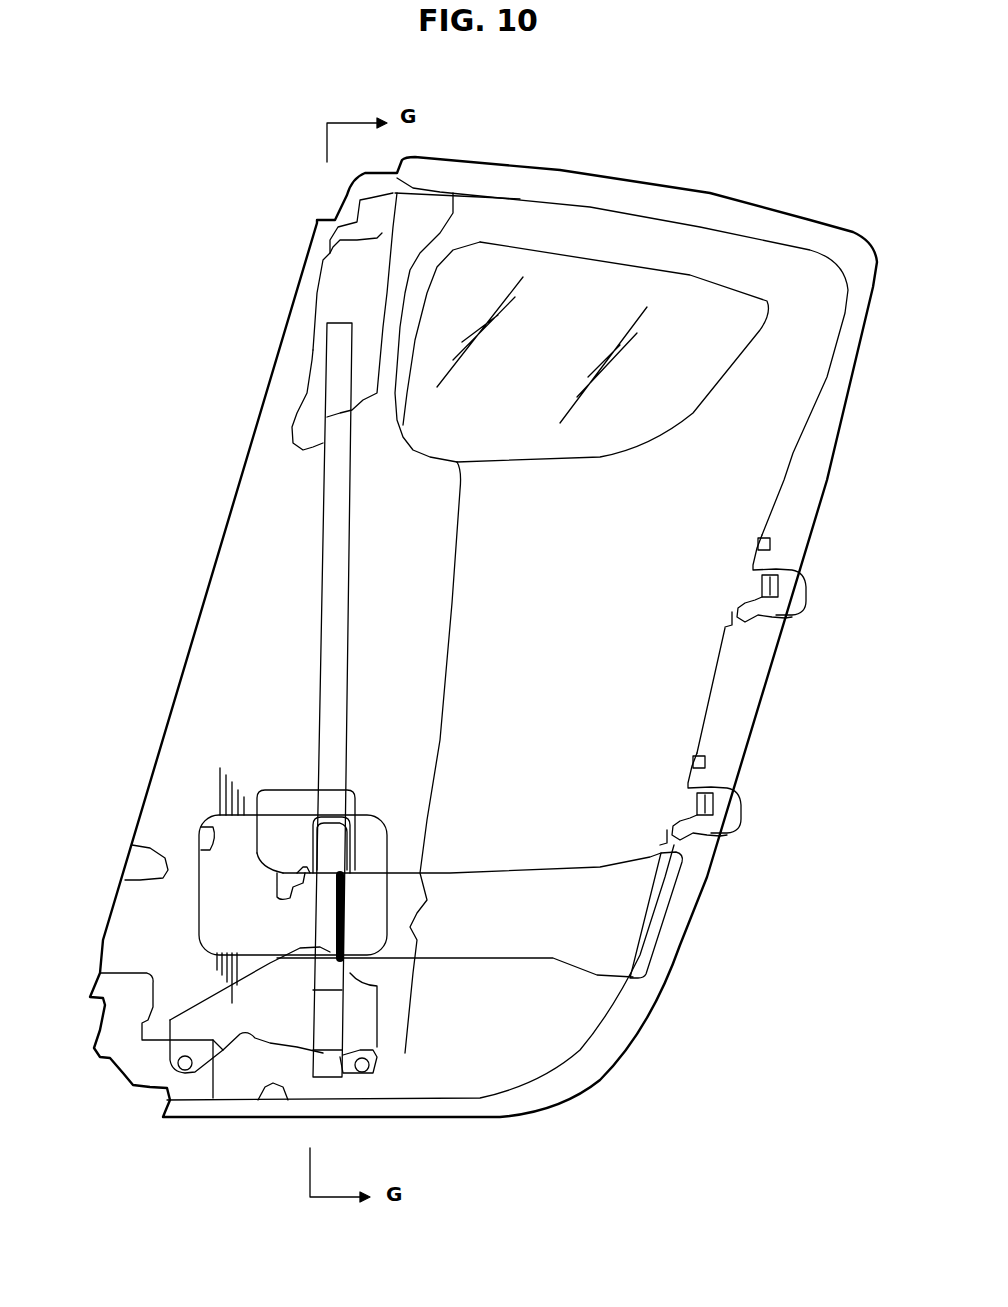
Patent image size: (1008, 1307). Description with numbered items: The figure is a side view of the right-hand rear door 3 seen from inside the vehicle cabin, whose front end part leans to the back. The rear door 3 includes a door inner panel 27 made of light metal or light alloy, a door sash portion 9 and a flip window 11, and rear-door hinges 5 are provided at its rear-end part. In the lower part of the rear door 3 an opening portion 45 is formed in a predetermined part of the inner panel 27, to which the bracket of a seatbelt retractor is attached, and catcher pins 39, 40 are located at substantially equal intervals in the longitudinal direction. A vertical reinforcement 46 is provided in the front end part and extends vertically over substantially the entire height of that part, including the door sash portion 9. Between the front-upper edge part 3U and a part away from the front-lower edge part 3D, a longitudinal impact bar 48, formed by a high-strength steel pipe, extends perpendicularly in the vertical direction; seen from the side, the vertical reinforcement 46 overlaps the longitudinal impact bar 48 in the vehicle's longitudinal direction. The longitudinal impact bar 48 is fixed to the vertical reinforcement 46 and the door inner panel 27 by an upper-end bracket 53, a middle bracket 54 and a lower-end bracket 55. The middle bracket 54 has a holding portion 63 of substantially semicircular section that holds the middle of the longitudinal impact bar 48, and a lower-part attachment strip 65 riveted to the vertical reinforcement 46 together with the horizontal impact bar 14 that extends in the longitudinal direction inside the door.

The rear door 3 is at (186, 579).
The front-upper edge part 3U is at (357, 185).
The front-lower edge part 3D is at (113, 1067).
The rear-door hinge 5 is at (797, 562).
The door sash portion 9 is at (587, 233).
The flip window 11 is at (548, 371).
The horizontal impact bar 14 is at (467, 873).
The door inner panel 27 is at (565, 703).
The catcher pin 39 is at (157, 1080).
The catcher pin 40 is at (368, 1072).
The opening portion 45 is at (204, 831).
The vertical reinforcement 46 is at (452, 603).
The longitudinal impact bar 48 is at (320, 627).
The upper-end bracket 53 is at (320, 313).
The middle bracket 54 is at (288, 790).
The lower-end bracket 55 is at (400, 1027).
The holding portion 63 is at (327, 840).
The lower-part attachment strip 65 is at (290, 903).